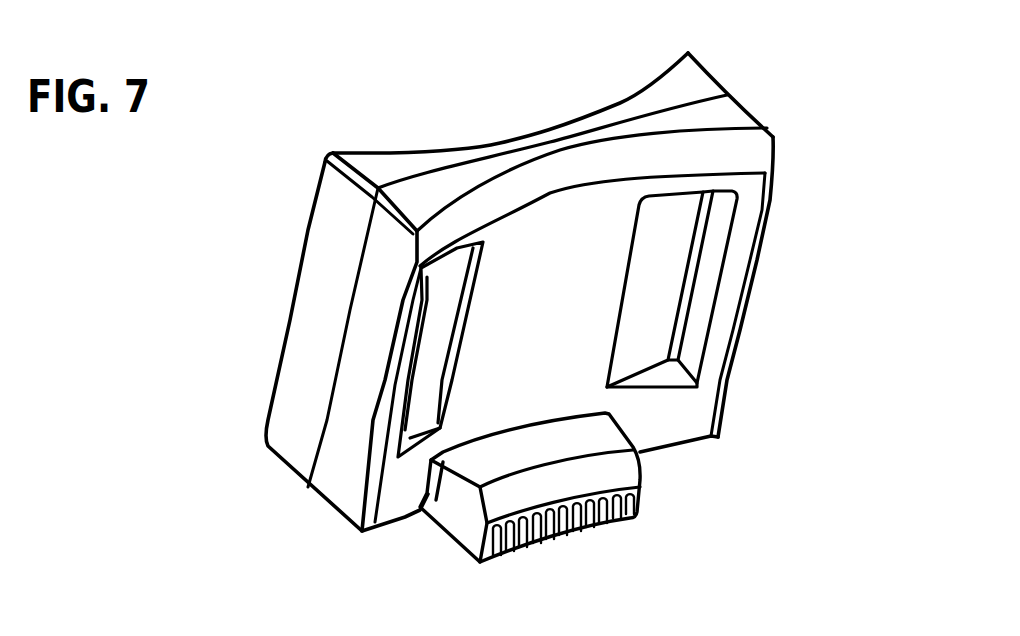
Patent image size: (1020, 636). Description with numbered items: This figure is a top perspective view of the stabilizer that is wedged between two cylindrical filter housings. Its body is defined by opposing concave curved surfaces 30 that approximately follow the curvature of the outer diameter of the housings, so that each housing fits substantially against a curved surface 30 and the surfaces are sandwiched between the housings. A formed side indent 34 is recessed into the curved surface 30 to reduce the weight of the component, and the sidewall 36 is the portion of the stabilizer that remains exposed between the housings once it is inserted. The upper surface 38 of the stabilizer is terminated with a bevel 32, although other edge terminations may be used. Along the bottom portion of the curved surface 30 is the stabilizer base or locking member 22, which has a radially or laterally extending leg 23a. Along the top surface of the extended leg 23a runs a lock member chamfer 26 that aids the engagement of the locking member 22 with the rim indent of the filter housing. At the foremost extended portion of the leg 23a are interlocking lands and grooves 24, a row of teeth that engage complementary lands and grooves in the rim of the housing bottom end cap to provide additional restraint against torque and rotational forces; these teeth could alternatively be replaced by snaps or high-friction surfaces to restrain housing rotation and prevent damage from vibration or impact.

The curved surface 30 is at (567, 323).
The bevel 32 is at (747, 157).
The upper surface 38 is at (678, 87).
The sidewall 36 is at (763, 234).
The side indent 34 is at (698, 313).
The extended leg 23a is at (485, 430).
The locking member 22 is at (432, 526).
The lock member chamfer 26 is at (625, 467).
The lands and grooves 24 is at (600, 511).